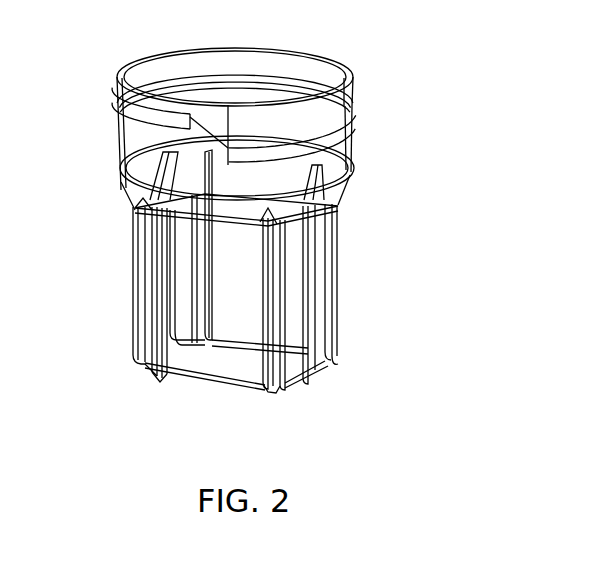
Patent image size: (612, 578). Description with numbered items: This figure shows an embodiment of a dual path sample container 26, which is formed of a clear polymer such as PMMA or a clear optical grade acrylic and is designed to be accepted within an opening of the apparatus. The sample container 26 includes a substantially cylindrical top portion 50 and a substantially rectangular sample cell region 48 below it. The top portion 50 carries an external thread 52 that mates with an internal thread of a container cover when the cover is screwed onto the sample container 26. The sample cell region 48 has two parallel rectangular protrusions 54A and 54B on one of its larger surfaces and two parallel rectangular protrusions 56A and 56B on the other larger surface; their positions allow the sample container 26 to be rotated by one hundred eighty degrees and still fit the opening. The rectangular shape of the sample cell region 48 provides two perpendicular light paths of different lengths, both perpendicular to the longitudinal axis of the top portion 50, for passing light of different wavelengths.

The sample container 26 is at (362, 90).
The top portion 50 is at (362, 150).
The external thread 52 is at (123, 101).
The sample cell region 48 is at (341, 259).
The rectangular protrusion 56A is at (231, 293).
The rectangular protrusion 56B is at (345, 177).
The rectangular protrusion 54A is at (173, 377).
The rectangular protrusion 54B is at (289, 391).